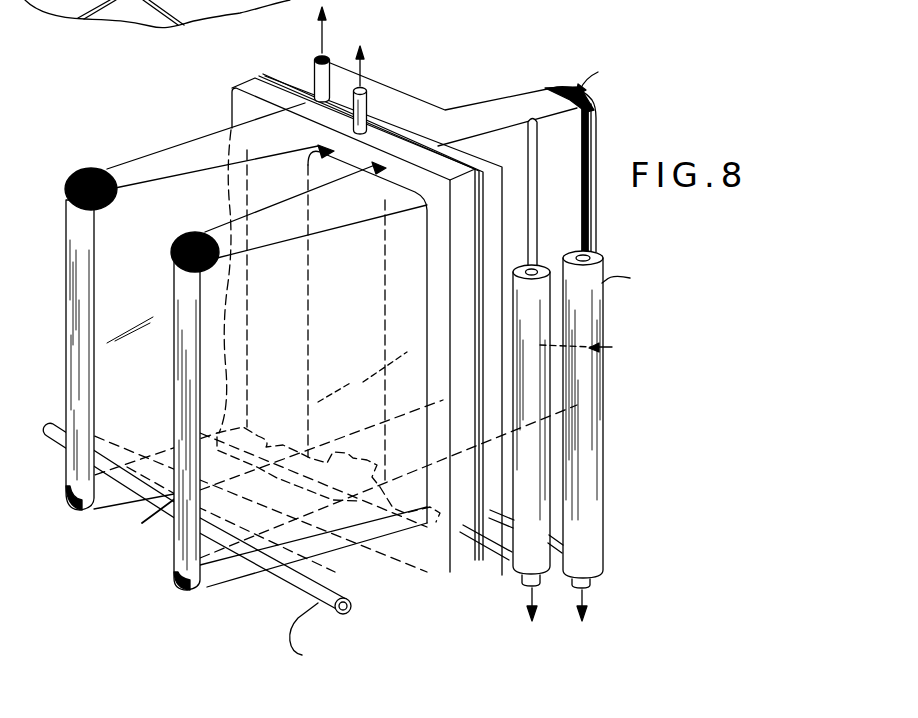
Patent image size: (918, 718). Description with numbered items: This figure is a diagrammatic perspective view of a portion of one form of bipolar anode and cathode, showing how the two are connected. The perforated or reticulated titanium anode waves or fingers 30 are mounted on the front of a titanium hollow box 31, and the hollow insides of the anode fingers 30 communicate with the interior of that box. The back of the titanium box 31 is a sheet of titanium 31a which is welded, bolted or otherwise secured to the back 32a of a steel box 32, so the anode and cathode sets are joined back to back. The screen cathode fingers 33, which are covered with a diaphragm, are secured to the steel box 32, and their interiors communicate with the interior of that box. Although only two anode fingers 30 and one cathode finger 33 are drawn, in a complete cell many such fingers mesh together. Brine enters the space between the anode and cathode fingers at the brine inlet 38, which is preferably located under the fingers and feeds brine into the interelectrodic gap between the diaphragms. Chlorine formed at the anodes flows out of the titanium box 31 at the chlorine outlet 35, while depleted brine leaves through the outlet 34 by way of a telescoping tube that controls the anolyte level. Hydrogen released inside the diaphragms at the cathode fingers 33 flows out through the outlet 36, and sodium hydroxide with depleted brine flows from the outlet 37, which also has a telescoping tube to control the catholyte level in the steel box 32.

The anode fingers 30 is at (78, 176).
The titanium hollow box 31 is at (240, 86).
The sheet of titanium 31a is at (248, 80).
The steel box 32 is at (388, 128).
The back of the steel box 32a is at (282, 78).
The screen cathode fingers 33 is at (493, 100).
The outlet 34 is at (537, 452).
The chlorine outlet 35 is at (363, 84).
The outlet 36 is at (337, 51).
The outlet 37 is at (597, 425).
The brine inlet 38 is at (315, 580).